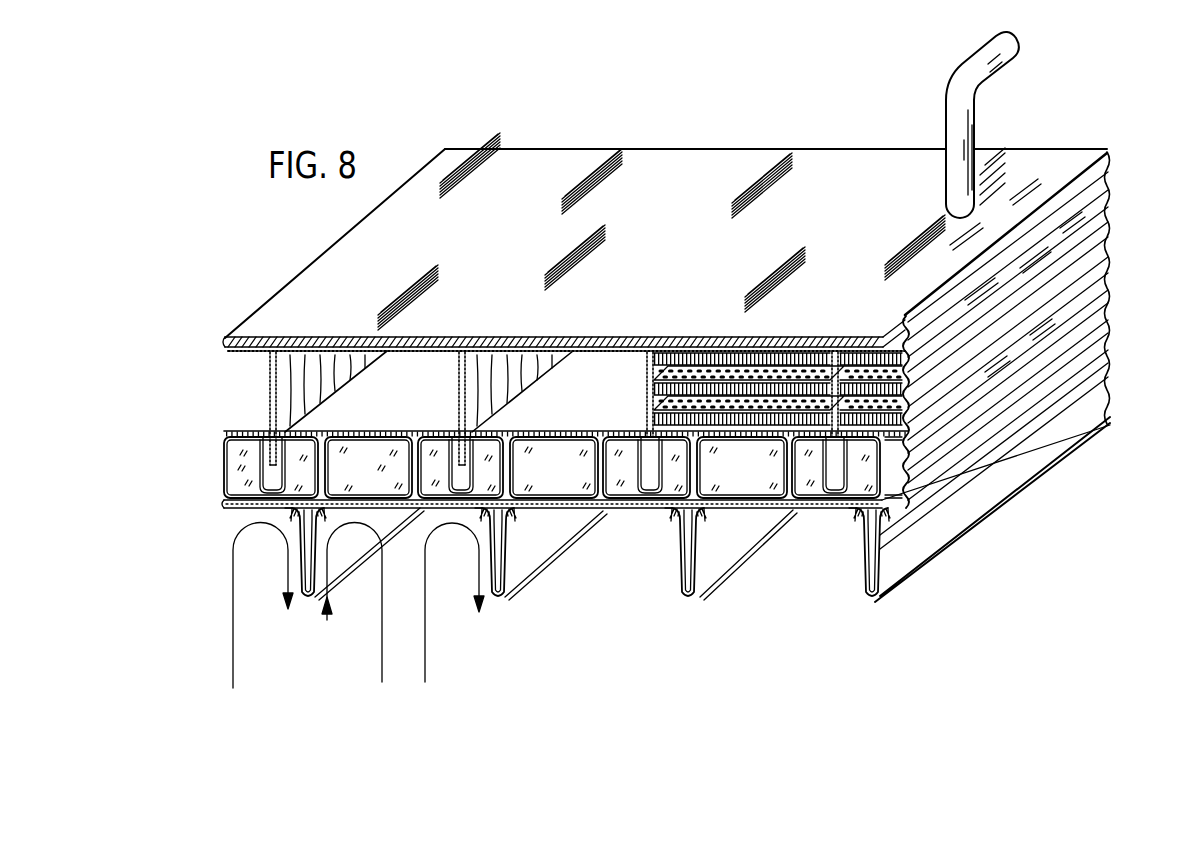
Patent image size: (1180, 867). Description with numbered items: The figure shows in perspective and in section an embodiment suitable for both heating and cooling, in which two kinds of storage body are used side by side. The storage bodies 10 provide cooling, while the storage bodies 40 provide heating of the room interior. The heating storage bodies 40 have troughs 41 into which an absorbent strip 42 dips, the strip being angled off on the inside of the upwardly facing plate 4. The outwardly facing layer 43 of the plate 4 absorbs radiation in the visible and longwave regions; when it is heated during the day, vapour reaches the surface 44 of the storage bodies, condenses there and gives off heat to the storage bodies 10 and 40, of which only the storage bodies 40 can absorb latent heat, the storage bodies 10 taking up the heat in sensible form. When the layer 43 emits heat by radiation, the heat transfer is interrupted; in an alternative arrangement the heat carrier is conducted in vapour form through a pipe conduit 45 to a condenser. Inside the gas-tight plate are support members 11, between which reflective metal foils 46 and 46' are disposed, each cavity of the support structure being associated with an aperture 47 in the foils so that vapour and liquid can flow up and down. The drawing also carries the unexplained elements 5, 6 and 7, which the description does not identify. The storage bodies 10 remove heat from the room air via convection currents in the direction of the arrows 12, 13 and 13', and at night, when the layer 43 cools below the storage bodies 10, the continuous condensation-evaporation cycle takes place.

The upwardly facing plate 4 is at (236, 346).
The bottom plate 5 is at (226, 500).
The end rib 6 is at (882, 556).
The insulating block body 7 is at (1098, 210).
The storage bodies 10 is at (378, 485).
The support members 11 is at (770, 390).
The arrow 12 is at (382, 682).
The arrow 13 is at (325, 615).
The arrow 13' is at (458, 601).
The storage bodies 40 is at (442, 495).
The troughs 41 is at (843, 478).
The absorbent strip 42 is at (500, 383).
The outwardly facing layer 43 is at (714, 176).
The surface of the storage bodies 44 is at (422, 396).
The pipe conduit 45 is at (947, 108).
The reflective metal foil 46 is at (754, 394).
The reflective metal foil 46' is at (778, 337).
The aperture 47 is at (820, 370).